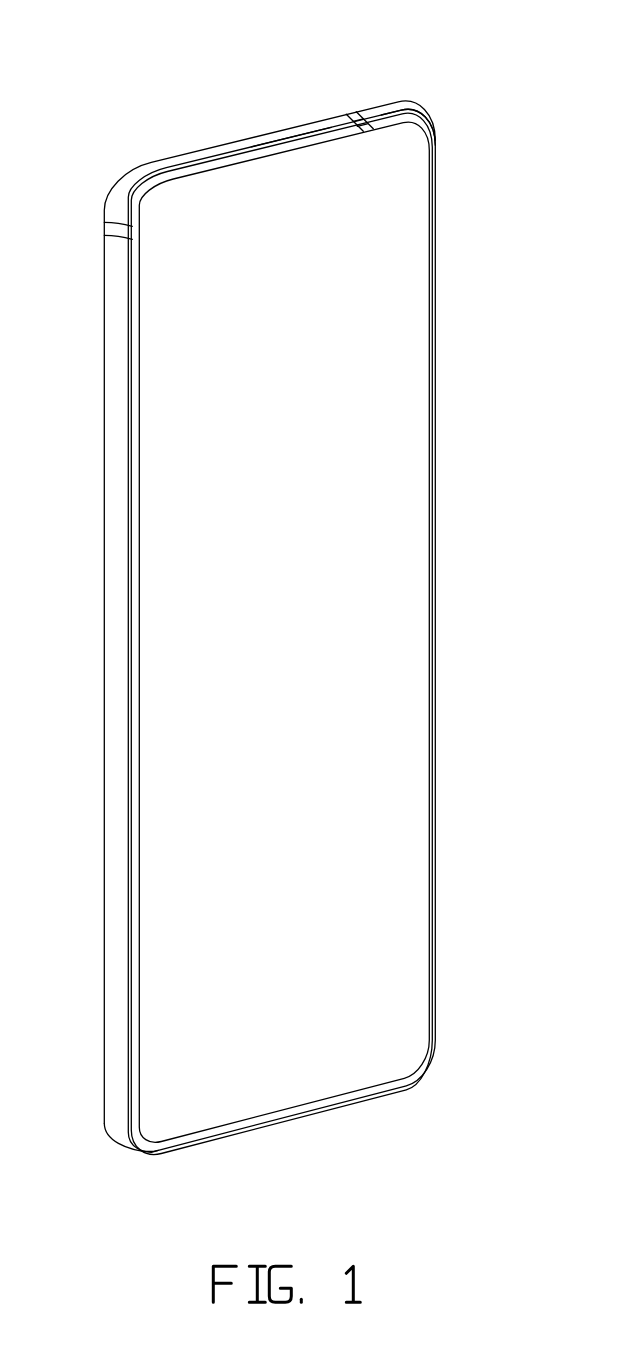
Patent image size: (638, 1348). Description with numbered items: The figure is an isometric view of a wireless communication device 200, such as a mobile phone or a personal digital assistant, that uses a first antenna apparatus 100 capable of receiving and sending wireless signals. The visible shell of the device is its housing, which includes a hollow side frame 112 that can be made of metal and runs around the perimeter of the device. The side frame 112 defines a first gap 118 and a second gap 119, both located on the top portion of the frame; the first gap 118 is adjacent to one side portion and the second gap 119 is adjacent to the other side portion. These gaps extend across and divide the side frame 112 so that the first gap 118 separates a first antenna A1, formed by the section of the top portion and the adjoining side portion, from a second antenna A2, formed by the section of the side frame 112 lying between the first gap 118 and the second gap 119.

The first antenna apparatus 100 is at (391, 63).
The wireless communication device 200 is at (162, 32).
The side frame 112 is at (115, 583).
The first gap 118 is at (347, 114).
The second gap 119 is at (110, 229).
The first antenna A1 is at (397, 105).
The second antenna A2 is at (284, 132).